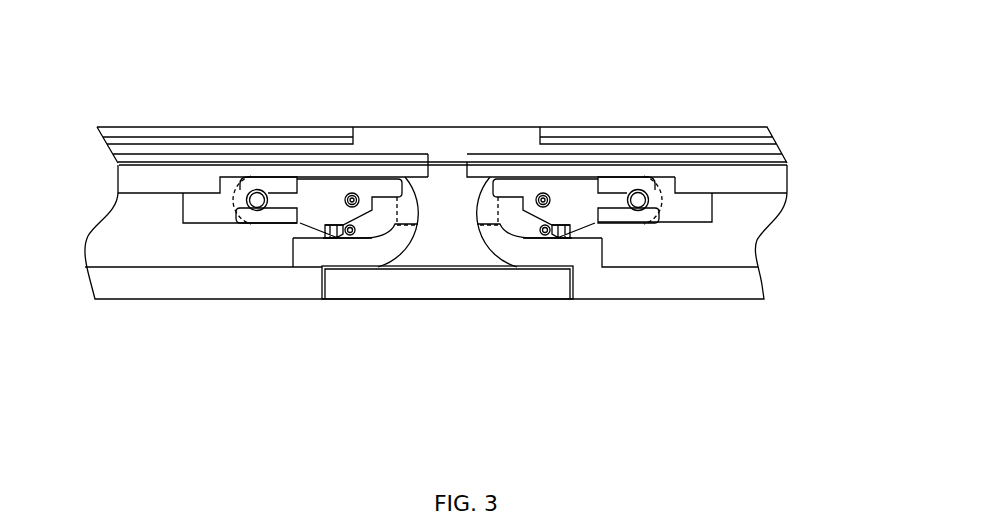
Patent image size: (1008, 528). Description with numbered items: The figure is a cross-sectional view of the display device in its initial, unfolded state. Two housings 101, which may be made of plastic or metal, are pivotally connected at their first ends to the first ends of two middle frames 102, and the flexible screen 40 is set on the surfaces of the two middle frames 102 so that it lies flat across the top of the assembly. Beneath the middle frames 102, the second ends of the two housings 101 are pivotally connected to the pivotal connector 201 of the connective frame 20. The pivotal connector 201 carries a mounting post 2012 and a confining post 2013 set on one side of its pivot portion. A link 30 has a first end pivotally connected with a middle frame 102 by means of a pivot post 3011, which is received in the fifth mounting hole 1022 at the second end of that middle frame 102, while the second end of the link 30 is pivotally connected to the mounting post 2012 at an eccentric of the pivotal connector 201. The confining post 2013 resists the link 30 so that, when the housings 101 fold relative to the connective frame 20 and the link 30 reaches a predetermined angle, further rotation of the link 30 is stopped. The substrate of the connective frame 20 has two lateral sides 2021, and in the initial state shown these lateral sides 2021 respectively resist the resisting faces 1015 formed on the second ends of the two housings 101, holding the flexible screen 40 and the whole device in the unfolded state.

The flexible screen 40 is at (307, 160).
The pivotal connector 201 is at (515, 210).
The mounting post 2012 is at (543, 180).
The fifth mounting hole 1022 is at (610, 190).
The pivot post 3011 is at (638, 198).
The resisting face 1015 is at (332, 268).
The lateral side 2021 is at (336, 242).
The connective frame 20 is at (432, 280).
The confining post 2013 is at (545, 236).
The link 30 is at (579, 217).
The housing 101 is at (668, 276).
The middle frame 102 is at (687, 210).